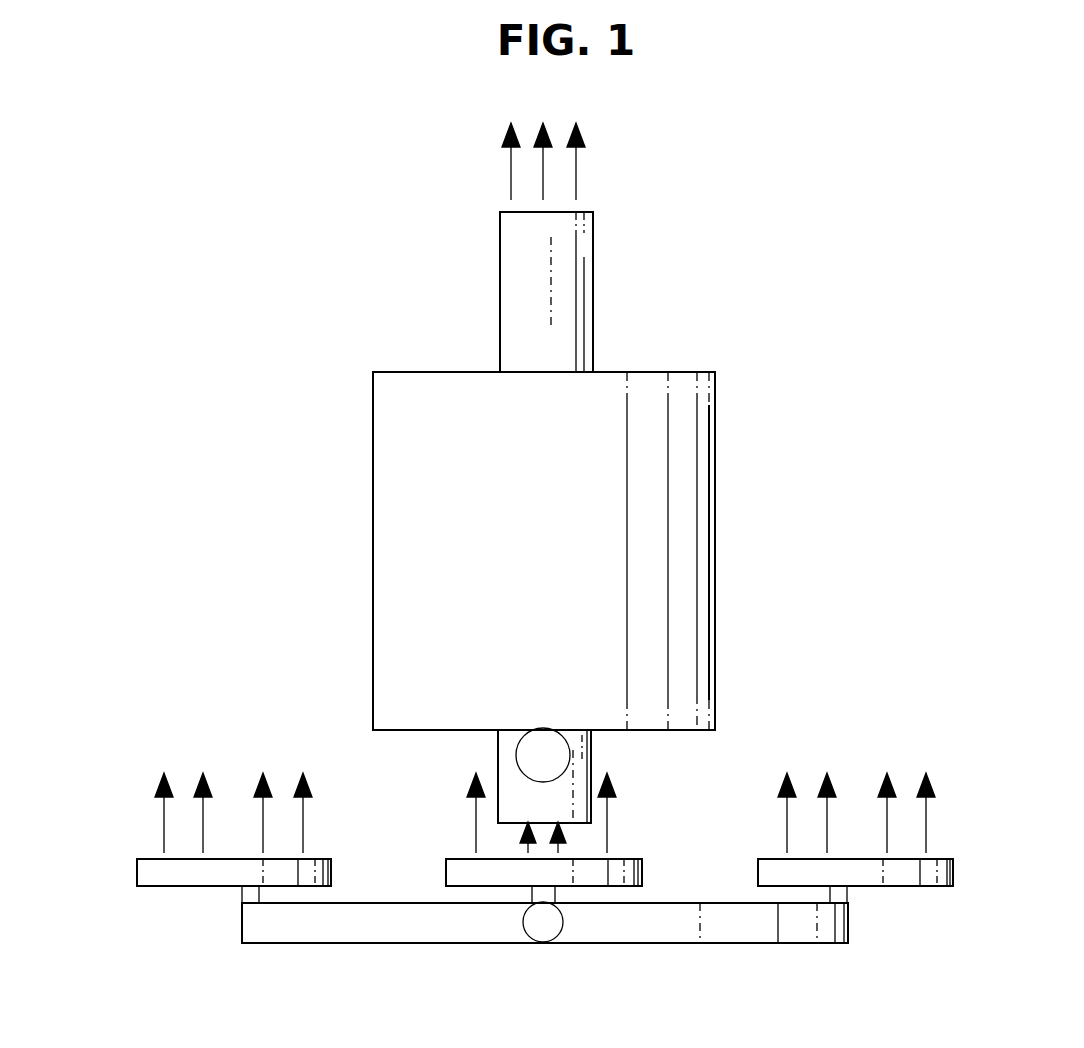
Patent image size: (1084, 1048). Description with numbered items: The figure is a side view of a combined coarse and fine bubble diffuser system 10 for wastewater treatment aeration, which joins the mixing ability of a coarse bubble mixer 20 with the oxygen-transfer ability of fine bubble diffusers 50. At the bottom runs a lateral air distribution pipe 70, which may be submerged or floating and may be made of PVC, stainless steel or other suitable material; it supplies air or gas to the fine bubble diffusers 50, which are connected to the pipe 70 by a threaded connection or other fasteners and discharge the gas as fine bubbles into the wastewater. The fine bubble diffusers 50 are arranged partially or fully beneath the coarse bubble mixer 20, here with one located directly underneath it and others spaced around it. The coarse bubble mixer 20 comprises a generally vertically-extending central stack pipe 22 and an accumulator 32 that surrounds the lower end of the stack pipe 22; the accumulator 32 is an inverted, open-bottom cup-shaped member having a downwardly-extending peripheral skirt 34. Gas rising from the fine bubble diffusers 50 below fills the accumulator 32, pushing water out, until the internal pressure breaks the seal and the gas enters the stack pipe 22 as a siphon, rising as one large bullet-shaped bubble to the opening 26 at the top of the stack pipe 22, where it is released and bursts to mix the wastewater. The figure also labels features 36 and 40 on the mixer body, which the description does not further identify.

The combined diffuser system 10 is at (221, 405).
The coarse bubble mixer 20 is at (312, 588).
The stack pipe 22 is at (570, 335).
The opening 26 is at (583, 212).
The accumulator 32 is at (740, 487).
The skirt 34 is at (703, 713).
The body bottom corner 36 is at (390, 730).
The body side wall 40 is at (686, 371).
The fine bubble diffusers 50 is at (128, 848).
The lateral air distribution pipe 70 is at (718, 928).